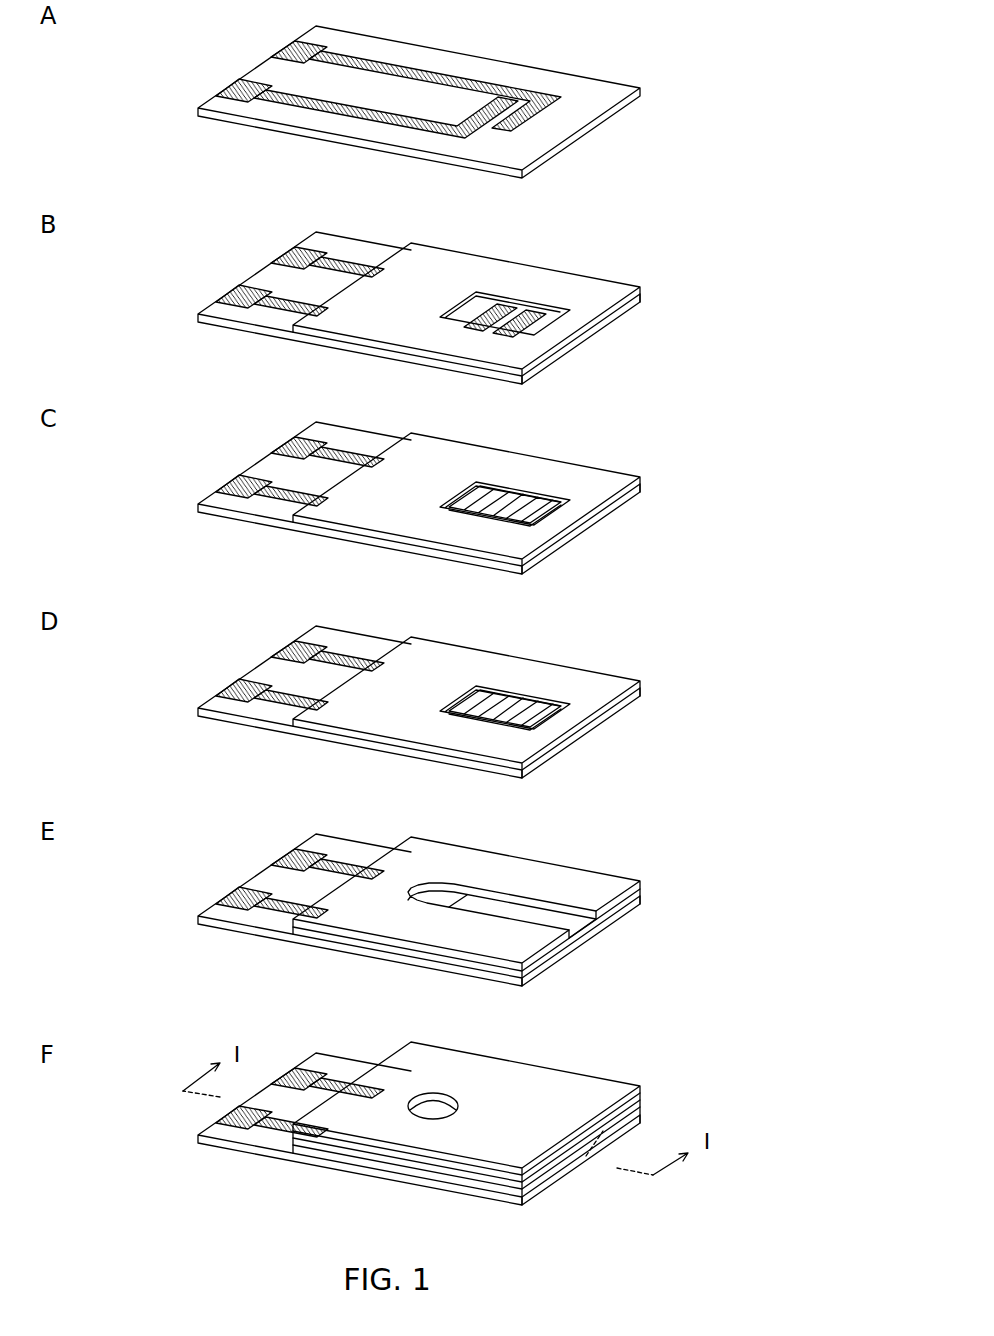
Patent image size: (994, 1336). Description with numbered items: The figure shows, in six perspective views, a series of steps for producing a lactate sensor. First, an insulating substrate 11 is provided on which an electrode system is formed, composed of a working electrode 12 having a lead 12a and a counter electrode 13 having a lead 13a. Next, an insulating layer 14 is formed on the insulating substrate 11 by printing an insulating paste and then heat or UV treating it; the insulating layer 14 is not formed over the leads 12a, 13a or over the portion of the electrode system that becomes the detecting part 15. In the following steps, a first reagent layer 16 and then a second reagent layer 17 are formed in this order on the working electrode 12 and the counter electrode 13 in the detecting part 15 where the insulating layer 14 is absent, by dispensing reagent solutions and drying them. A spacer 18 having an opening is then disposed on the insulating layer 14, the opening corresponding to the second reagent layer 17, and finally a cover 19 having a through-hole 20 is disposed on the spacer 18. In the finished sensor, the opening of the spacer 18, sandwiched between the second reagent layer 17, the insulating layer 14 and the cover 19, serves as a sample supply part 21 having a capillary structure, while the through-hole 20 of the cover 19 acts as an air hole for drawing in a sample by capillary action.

The insulating substrate 11 is at (419, 633).
The working electrode 12 is at (394, 575).
The lead 12a is at (203, 586).
The counter electrode 13 is at (444, 561).
The lead 13a is at (283, 548).
The insulating layer 14 is at (494, 709).
The detecting part 15 is at (505, 522).
The first reagent layer 16 is at (513, 567).
The second reagent layer 17 is at (505, 757).
The spacer 18 is at (490, 1005).
The cover 19 is at (466, 1123).
The through-hole 20 is at (458, 1075).
The sample supply part 21 is at (603, 1172).